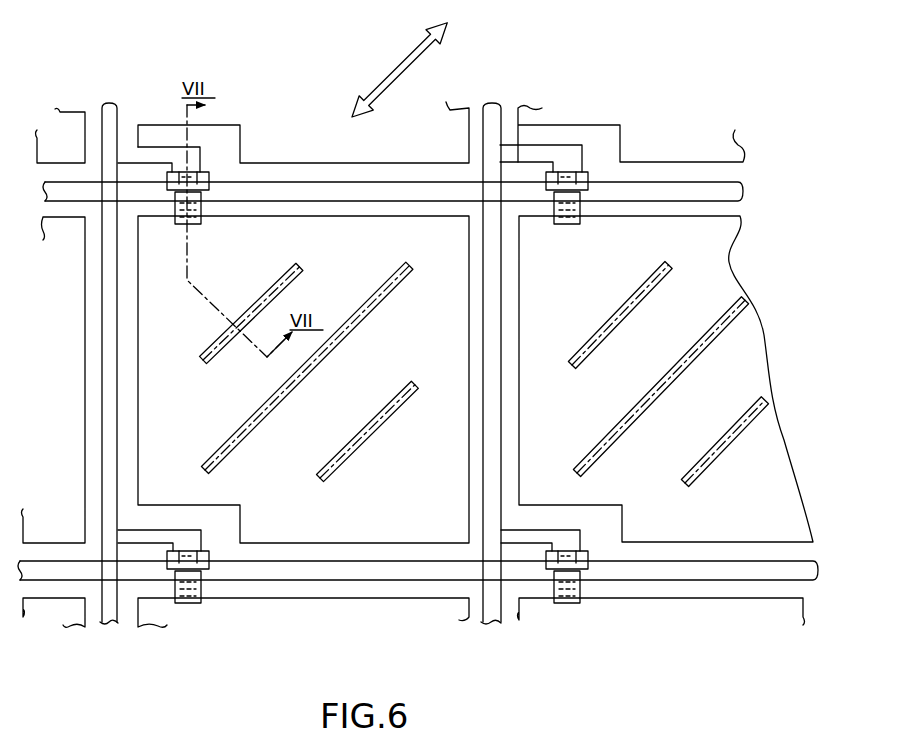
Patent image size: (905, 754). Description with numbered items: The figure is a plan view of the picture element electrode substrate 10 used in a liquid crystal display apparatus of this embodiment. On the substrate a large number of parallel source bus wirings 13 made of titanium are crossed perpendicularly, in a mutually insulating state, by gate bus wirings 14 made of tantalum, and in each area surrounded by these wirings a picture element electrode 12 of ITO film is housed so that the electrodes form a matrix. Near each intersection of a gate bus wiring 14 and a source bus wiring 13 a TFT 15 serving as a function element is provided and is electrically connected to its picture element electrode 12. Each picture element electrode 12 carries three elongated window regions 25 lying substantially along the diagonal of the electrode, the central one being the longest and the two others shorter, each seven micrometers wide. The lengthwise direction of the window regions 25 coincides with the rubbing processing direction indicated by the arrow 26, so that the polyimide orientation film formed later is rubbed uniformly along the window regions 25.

The picture element electrode substrate 10 is at (537, 88).
The picture element electrode 12 is at (160, 335).
The source bus wiring 13 is at (108, 407).
The gate bus wiring 14 is at (348, 188).
The TFT 15 is at (215, 142).
The window region 25 is at (280, 395).
The arrow 26 is at (392, 70).